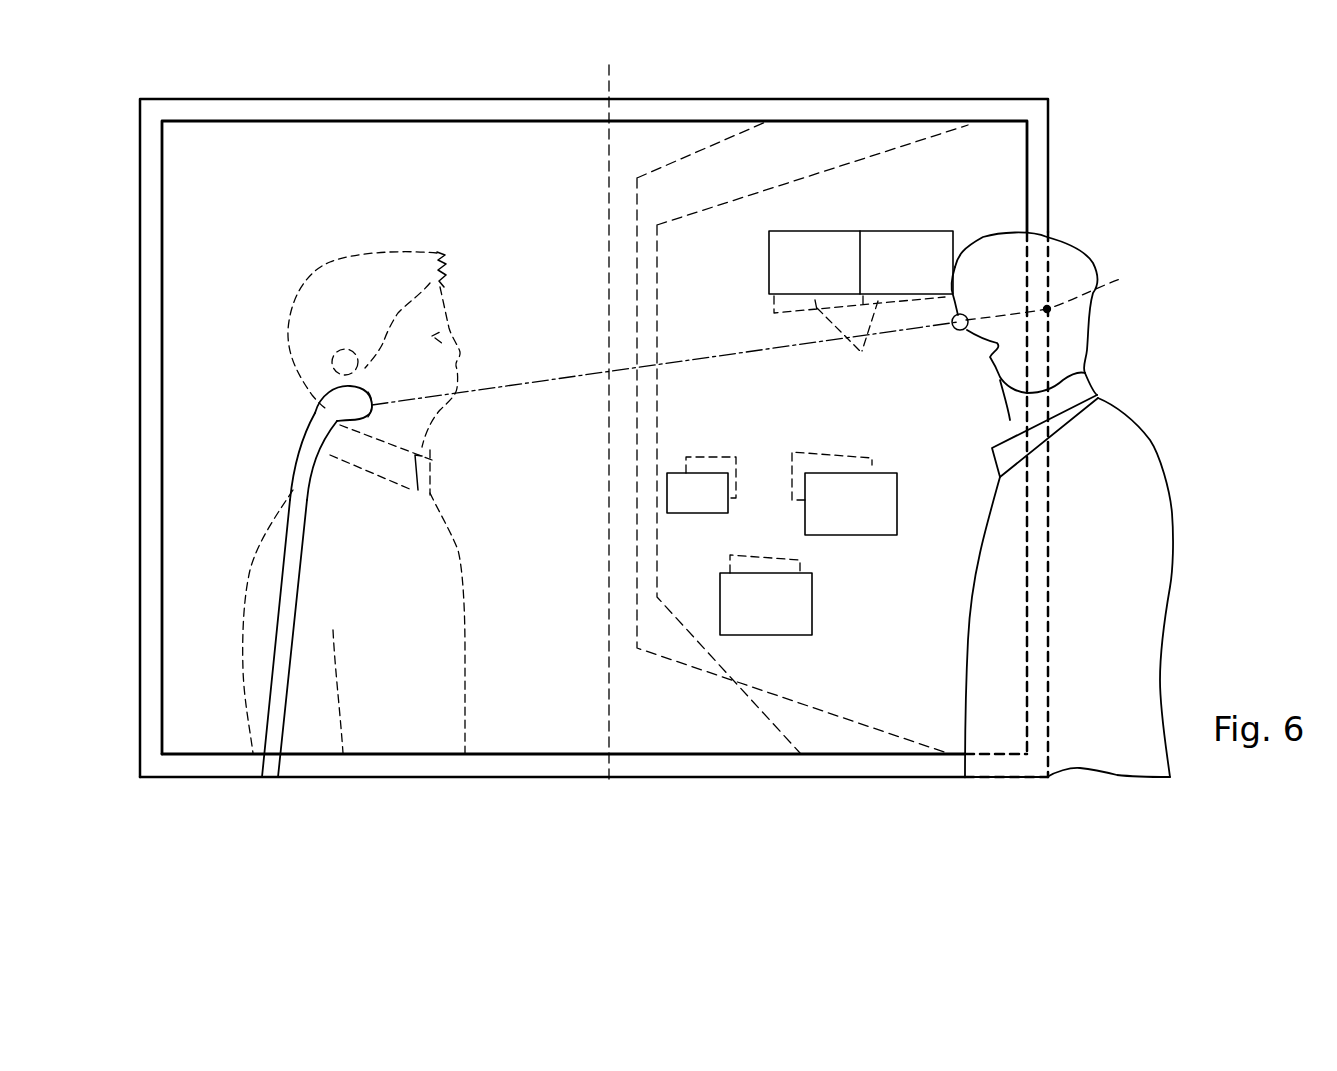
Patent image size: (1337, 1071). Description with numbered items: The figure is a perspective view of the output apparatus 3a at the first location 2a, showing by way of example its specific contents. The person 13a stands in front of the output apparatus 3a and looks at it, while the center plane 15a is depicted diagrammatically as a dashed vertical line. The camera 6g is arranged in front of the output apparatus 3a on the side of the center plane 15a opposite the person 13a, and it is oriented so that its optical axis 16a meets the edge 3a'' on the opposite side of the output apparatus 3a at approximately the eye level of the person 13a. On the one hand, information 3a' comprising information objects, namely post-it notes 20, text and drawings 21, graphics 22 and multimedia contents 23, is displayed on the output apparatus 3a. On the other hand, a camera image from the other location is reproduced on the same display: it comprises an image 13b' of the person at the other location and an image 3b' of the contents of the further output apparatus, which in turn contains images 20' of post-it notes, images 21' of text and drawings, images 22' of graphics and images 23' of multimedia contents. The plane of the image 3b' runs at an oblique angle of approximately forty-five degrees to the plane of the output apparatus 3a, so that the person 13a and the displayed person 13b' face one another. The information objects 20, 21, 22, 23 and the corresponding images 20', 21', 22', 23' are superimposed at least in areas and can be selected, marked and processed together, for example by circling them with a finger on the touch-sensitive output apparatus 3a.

The first location 2a is at (1146, 104).
The output apparatus 3a is at (606, 419).
The information 3a' is at (640, 437).
The edge 3a'' is at (1066, 294).
The image of the contents of the further output apparatus 3b' is at (802, 437).
The camera 6g is at (312, 417).
The person 13a is at (1115, 417).
The image of the person 13b' is at (388, 502).
The center plane 15a is at (606, 185).
The optical axis 16a is at (540, 375).
The post-it notes 20 is at (861, 233).
The images of post-it notes 20' is at (859, 337).
The text and drawings 21 is at (866, 535).
The images of text and drawings 21' is at (842, 448).
The graphics 22 is at (801, 610).
The images of graphics 22' is at (765, 532).
The multimedia contents 23 is at (697, 521).
The images of multimedia contents 23' is at (717, 447).